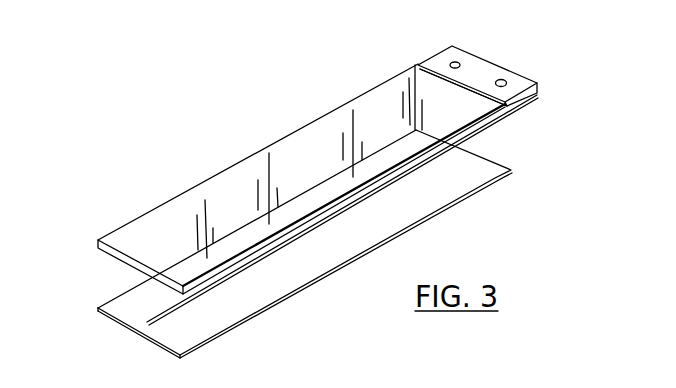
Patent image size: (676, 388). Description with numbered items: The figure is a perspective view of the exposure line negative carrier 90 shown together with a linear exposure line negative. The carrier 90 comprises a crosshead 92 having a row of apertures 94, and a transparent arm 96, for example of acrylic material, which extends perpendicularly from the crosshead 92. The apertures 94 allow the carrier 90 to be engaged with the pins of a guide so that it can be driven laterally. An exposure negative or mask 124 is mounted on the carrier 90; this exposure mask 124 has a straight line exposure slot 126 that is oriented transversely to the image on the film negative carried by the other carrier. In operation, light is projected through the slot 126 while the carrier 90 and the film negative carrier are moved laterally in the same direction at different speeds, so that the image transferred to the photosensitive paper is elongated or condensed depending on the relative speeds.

The exposure line negative carrier 90 is at (288, 138).
The crosshead 92 is at (483, 72).
The apertures 94 is at (506, 81).
The transparent arm 96 is at (474, 107).
The exposure negative or mask 124 is at (345, 243).
The straight line exposure slot 126 is at (378, 203).